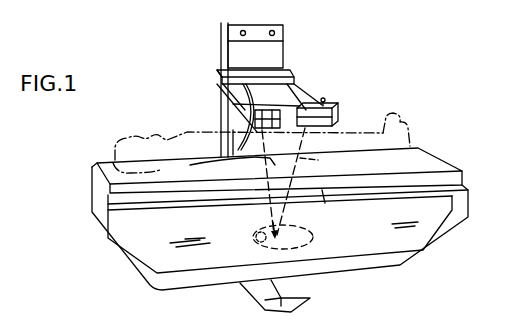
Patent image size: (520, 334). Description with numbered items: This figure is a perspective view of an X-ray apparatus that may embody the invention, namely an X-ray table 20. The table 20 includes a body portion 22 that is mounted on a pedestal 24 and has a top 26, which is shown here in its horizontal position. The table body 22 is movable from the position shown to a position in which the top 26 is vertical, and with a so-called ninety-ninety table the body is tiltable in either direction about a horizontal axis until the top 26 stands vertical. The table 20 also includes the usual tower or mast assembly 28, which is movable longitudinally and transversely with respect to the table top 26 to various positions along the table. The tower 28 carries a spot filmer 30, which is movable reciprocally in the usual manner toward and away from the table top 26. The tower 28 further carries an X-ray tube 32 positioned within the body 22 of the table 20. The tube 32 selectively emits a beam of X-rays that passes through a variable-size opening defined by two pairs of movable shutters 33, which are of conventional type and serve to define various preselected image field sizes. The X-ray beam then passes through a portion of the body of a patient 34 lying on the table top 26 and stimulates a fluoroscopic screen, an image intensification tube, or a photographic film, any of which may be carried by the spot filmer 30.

The X-ray table 20 is at (143, 284).
The body portion 22 is at (400, 261).
The pedestal 24 is at (301, 286).
The top 26 is at (433, 157).
The tower or mast assembly 28 is at (277, 53).
The spot filmer 30 is at (322, 90).
The X-ray tube 32 is at (319, 236).
The movable shutters 33 is at (338, 208).
The patient 34 is at (213, 130).